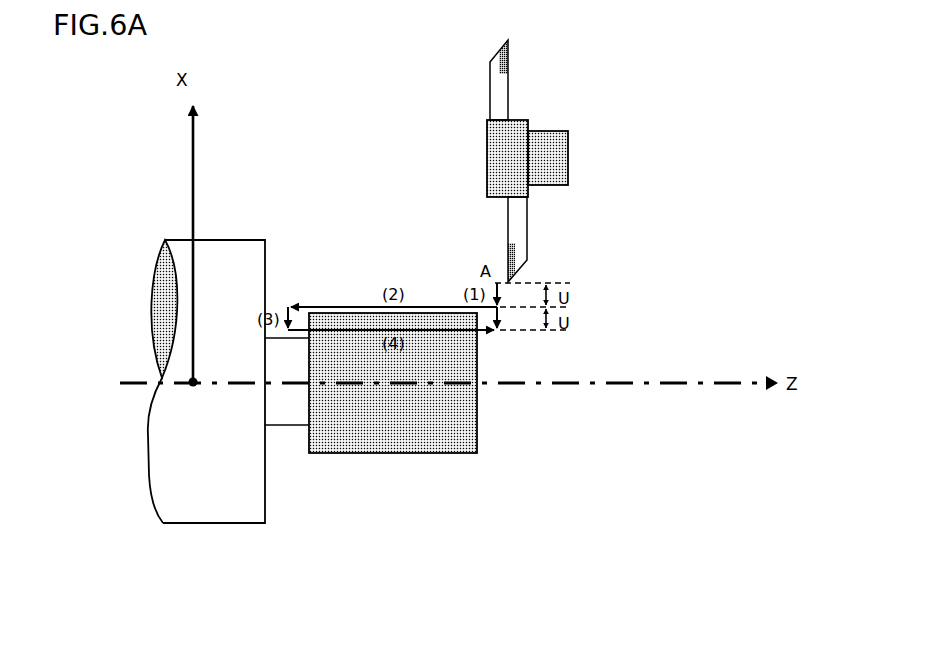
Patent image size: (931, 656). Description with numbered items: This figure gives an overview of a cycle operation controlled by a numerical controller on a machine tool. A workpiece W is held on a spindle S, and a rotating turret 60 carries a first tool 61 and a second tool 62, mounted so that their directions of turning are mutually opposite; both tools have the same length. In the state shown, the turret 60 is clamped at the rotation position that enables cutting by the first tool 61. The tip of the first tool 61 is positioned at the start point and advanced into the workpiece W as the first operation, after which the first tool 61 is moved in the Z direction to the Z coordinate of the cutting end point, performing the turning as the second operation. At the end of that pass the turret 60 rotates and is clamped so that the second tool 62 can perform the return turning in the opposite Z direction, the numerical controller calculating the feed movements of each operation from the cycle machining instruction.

The rotating turret 60 is at (567, 161).
The first tool 61 is at (517, 226).
The second tool 62 is at (499, 103).
The workpiece W is at (457, 428).
The spindle S is at (180, 476).